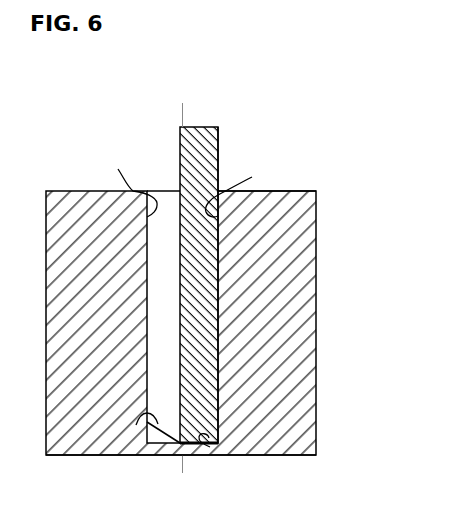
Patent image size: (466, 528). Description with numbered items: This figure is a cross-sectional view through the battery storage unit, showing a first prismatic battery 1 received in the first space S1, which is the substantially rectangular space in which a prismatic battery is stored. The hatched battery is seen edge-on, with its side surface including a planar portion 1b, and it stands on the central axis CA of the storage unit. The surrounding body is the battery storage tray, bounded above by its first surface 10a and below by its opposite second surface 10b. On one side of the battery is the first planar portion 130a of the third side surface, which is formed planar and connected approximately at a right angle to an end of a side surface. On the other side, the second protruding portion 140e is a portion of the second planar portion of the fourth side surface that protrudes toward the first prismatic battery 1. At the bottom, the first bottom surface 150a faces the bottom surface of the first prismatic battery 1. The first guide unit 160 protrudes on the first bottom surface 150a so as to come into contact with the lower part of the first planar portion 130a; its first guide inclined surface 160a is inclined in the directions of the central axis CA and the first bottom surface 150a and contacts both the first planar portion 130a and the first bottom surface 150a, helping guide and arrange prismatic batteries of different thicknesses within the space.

The first prismatic battery 1 is at (213, 136).
The planar portion 1b is at (218, 152).
The central axis CA is at (181, 278).
The first surface 10a is at (300, 190).
The second surface 10b is at (244, 456).
The first space S1 is at (164, 186).
The first planar portion 130a is at (123, 185).
The second protruding portion 140e is at (235, 189).
The first guide unit 160 is at (157, 437).
The first guide inclined surface 160a is at (130, 427).
The first bottom surface 150a is at (210, 447).